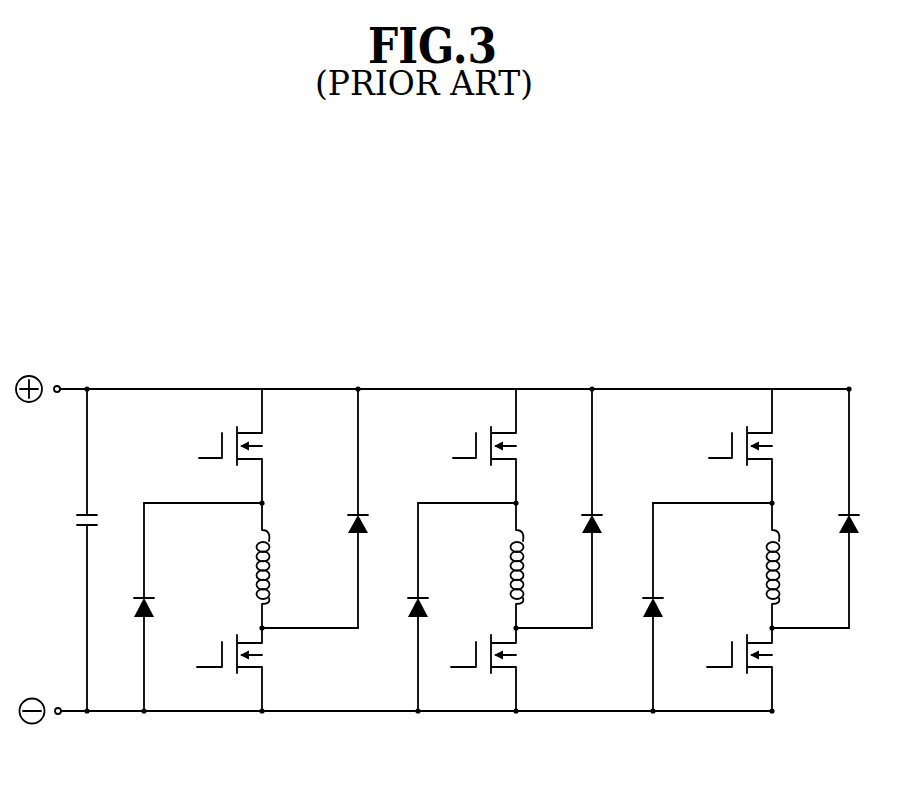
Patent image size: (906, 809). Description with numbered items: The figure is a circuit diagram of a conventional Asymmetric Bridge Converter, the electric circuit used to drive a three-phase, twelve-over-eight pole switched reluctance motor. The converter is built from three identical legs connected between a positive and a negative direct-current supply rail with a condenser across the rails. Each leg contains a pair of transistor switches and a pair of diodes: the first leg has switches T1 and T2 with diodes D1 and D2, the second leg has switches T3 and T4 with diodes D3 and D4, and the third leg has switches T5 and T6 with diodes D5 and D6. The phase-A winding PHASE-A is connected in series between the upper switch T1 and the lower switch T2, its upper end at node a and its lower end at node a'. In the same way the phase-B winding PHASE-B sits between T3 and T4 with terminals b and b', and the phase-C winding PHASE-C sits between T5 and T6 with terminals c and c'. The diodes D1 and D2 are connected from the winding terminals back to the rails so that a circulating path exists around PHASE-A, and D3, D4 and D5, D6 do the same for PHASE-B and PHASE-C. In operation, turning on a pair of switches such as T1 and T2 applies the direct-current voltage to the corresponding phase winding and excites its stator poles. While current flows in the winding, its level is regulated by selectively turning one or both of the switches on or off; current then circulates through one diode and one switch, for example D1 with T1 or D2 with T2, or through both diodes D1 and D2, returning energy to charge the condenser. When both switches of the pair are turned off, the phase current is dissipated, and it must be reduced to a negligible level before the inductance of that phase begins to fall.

The transistor element T1 is at (216, 446).
The transistor element T2 is at (217, 669).
The transistor element T3 is at (470, 446).
The transistor element T4 is at (471, 669).
The transistor element T5 is at (726, 446).
The transistor element T6 is at (727, 669).
The diode D1 is at (340, 508).
The diode D2 is at (127, 607).
The diode D3 is at (574, 508).
The diode D4 is at (400, 607).
The diode D5 is at (831, 508).
The diode D6 is at (635, 607).
The phase-A winding PHASE-A is at (210, 565).
The phase-B winding PHASE-B is at (472, 565).
The phase-C winding PHASE-C is at (721, 565).
The phase A winding start terminal node a is at (217, 501).
The phase A winding end terminal node a' is at (308, 612).
The phase B winding start terminal node b is at (481, 501).
The phase B winding end terminal node b' is at (552, 612).
The phase C winding start terminal node c is at (727, 501).
The phase C winding end terminal node c' is at (809, 612).